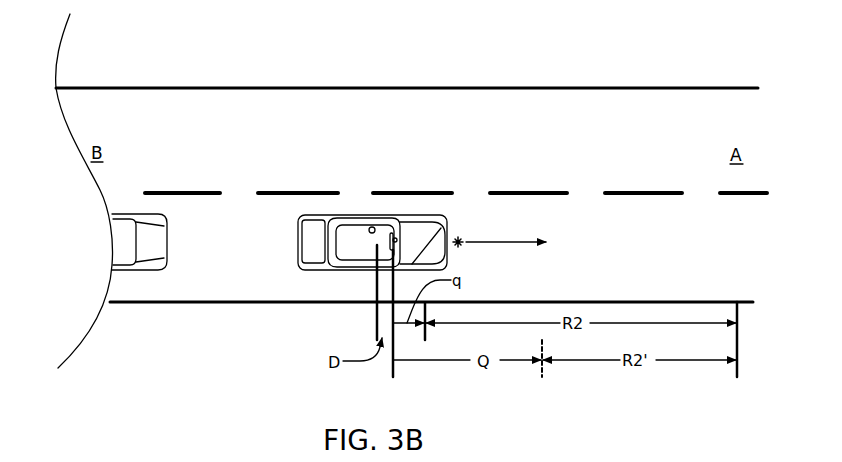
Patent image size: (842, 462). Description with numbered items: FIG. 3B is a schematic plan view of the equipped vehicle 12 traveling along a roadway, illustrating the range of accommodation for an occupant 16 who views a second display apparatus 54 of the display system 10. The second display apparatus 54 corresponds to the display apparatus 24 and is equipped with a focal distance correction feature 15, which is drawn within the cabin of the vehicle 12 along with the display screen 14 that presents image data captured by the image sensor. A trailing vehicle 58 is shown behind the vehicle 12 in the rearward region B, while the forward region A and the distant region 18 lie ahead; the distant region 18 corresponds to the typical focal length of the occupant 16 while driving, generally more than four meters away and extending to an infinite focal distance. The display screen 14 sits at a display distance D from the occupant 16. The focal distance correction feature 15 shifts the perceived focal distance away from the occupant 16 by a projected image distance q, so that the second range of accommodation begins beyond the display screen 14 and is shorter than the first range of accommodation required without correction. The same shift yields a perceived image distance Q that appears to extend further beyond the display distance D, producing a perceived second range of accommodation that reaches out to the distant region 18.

The display system 10 is at (436, 180).
The vehicle 12 is at (315, 214).
The display screen 14 is at (493, 201).
The display apparatus 24 is at (493, 201).
The second display apparatus 54 is at (396, 239).
The focal distance correction feature 15 is at (390, 232).
The occupant 16 is at (370, 226).
The distant region 18 is at (737, 302).
The trailing vehicle 58 is at (133, 214).